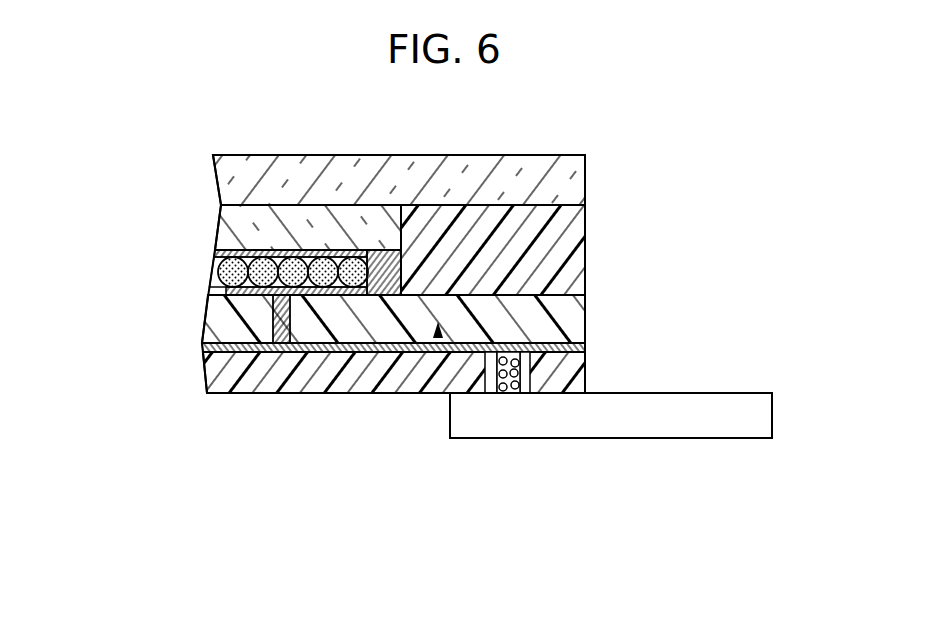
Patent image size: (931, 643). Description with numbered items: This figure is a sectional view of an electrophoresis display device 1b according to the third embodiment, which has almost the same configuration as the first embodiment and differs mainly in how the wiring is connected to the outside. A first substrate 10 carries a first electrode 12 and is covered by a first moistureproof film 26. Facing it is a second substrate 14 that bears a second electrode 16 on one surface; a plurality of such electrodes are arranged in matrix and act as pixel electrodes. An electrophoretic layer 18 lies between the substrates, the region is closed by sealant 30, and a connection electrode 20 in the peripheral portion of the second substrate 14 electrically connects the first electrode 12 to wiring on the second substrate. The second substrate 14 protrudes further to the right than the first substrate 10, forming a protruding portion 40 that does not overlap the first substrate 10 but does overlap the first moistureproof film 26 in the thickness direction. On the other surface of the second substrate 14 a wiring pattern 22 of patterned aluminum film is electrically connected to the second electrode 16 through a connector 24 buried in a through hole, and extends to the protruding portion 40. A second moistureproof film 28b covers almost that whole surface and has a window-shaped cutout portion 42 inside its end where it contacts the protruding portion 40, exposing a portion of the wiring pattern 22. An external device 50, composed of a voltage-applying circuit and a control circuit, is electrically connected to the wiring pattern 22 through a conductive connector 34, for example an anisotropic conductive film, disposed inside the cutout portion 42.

The electrophoresis display device 1b is at (508, 564).
The first substrate 10 is at (228, 232).
The first electrode 12 is at (217, 257).
The second substrate 14 is at (215, 310).
The second electrode 16 is at (230, 292).
The electrophoretic layer 18 is at (217, 271).
The connection electrode 20 is at (382, 256).
The wiring pattern 22 is at (345, 348).
The connector 24 is at (274, 310).
The first moistureproof film 26 is at (577, 180).
The second moistureproof film 28b is at (203, 377).
The sealant 30 is at (518, 210).
The conductive connector 34 is at (515, 385).
The protruding portion 40 is at (437, 338).
The cutout portion 42 is at (492, 377).
The external device 50 is at (730, 402).